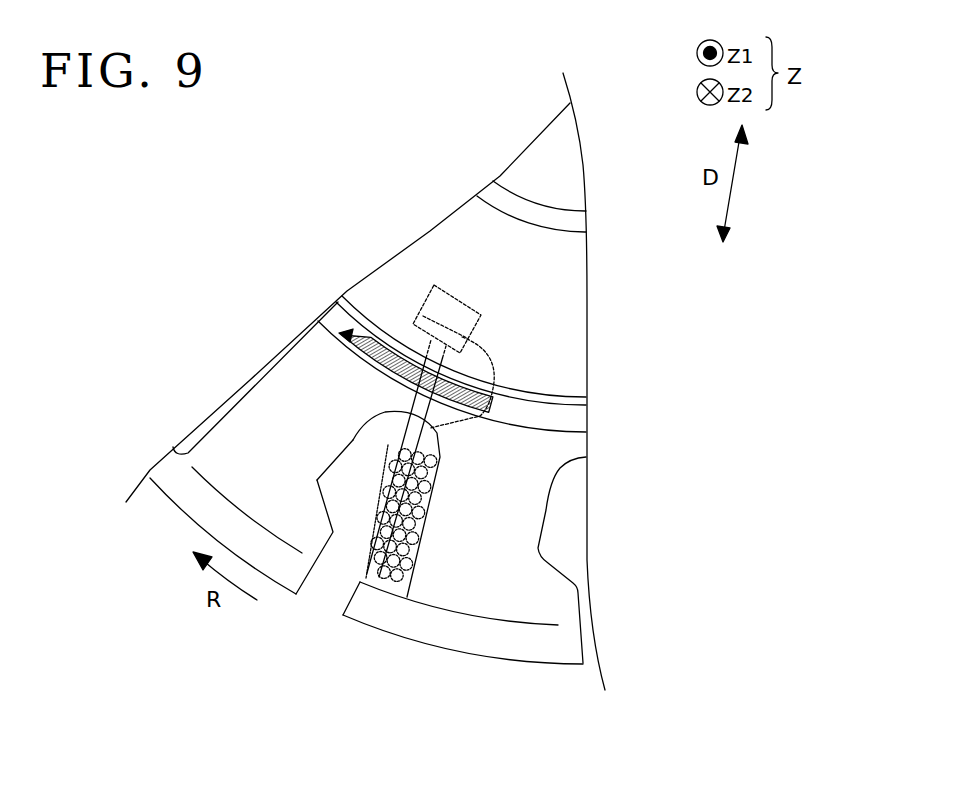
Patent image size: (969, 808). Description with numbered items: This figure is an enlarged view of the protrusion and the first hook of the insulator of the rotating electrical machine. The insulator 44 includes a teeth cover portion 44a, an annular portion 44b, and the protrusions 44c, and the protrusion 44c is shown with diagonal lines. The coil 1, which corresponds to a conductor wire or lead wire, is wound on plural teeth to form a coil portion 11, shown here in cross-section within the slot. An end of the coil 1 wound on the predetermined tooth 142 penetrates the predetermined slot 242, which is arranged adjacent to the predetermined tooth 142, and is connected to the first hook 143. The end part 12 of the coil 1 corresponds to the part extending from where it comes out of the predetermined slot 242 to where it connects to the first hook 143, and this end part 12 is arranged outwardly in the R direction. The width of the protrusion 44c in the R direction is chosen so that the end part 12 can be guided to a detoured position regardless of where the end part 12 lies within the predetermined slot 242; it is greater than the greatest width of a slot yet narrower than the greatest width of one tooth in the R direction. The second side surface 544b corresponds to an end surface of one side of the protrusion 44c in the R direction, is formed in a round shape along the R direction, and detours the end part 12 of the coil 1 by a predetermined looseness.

The insulator 44 is at (593, 140).
The teeth cover portion 44a is at (190, 512).
The annular portion 44b is at (582, 422).
The protrusion 44c is at (370, 364).
The predetermined tooth 142 is at (420, 620).
The predetermined slot 242 is at (328, 588).
The first hook 143 is at (456, 299).
The coil 1 is at (440, 470).
The coil portion 11 is at (430, 531).
The end part 12 is at (414, 402).
The second side surface 544b is at (327, 573).